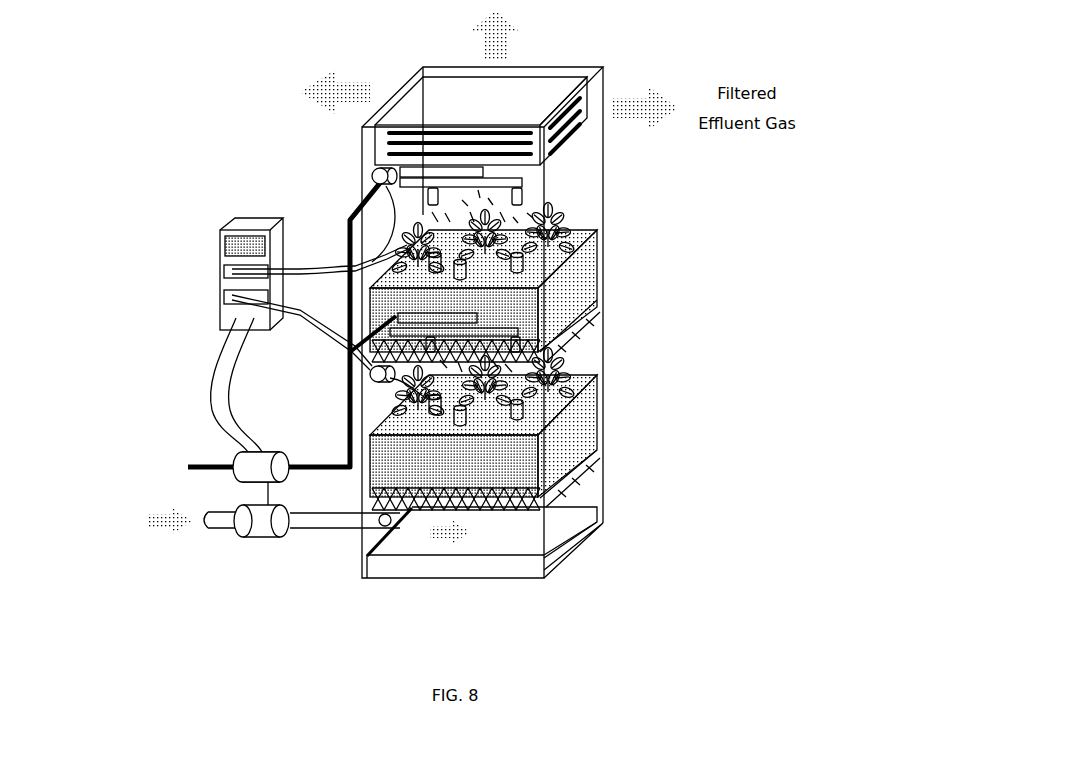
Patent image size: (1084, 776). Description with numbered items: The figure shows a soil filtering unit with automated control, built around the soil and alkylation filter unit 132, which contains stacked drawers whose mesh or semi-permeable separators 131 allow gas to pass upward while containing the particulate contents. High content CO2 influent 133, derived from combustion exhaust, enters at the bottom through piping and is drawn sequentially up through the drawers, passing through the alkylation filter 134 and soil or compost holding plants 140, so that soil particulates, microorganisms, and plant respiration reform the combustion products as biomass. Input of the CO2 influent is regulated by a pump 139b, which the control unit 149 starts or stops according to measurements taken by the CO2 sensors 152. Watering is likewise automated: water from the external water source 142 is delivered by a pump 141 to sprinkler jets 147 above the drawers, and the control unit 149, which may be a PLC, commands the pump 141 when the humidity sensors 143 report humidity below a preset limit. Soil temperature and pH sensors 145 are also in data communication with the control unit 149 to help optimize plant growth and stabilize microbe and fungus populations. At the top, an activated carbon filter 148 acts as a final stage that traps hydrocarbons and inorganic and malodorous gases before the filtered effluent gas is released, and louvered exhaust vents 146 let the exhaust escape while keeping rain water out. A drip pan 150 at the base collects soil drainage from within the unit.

The separators 131 is at (580, 318).
The soil and alkylation filter unit 132 is at (604, 172).
The high content CO2 influent 133 is at (325, 523).
The alkylation filter 134 is at (582, 282).
The pump 139b is at (260, 523).
The plants 140 is at (567, 222).
The pump 141 is at (270, 452).
The external water source 142 is at (345, 408).
The humidity sensors 143 is at (395, 247).
The pH sensors 145 is at (352, 298).
The exhaust vents 146 is at (390, 143).
The sprinkler jets 147 is at (423, 197).
The activated carbon filter 148 is at (517, 83).
The control unit 149 is at (248, 221).
The drip pan 150 is at (580, 527).
The CO2 sensors 152 is at (374, 172).